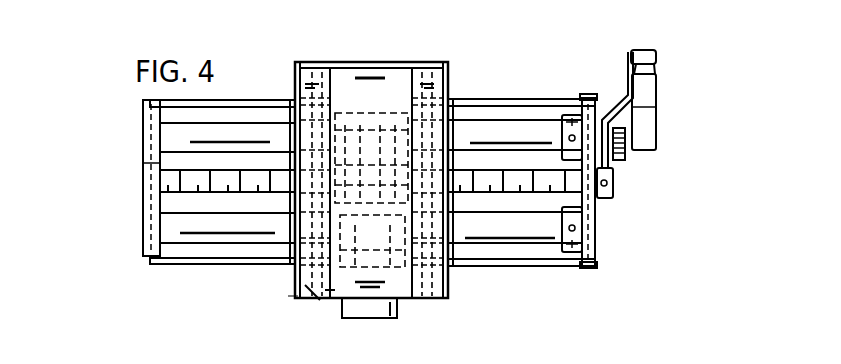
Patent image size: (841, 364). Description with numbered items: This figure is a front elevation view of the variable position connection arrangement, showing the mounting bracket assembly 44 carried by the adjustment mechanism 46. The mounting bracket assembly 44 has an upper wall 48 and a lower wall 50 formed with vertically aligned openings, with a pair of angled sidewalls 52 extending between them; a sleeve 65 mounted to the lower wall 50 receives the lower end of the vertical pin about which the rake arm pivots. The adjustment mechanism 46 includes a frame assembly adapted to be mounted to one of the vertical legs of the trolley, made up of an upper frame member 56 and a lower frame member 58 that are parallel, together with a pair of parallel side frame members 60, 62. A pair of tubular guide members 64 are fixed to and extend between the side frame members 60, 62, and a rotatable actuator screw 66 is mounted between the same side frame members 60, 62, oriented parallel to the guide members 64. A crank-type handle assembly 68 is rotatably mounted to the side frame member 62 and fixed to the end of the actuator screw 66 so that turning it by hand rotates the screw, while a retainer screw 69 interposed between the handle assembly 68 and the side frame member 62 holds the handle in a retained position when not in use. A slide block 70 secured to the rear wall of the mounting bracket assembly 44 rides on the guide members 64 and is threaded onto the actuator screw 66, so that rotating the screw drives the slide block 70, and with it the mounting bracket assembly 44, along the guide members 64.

The mounting bracket assembly 44 is at (290, 295).
The adjustment mechanism 46 is at (142, 101).
The upper wall 48 is at (390, 61).
The lower wall 50 is at (326, 304).
The angled sidewalls 52 is at (282, 62).
The upper frame member 56 is at (473, 93).
The lower frame member 58 is at (251, 266).
The side frame member 60 is at (142, 163).
The side frame member 62 is at (597, 218).
The tubular guide members 64 is at (242, 123).
The sleeve 65 is at (398, 310).
The actuator screw 66 is at (168, 196).
The handle assembly 68 is at (665, 80).
The retainer screw 69 is at (620, 160).
The slide block 70 is at (312, 303).